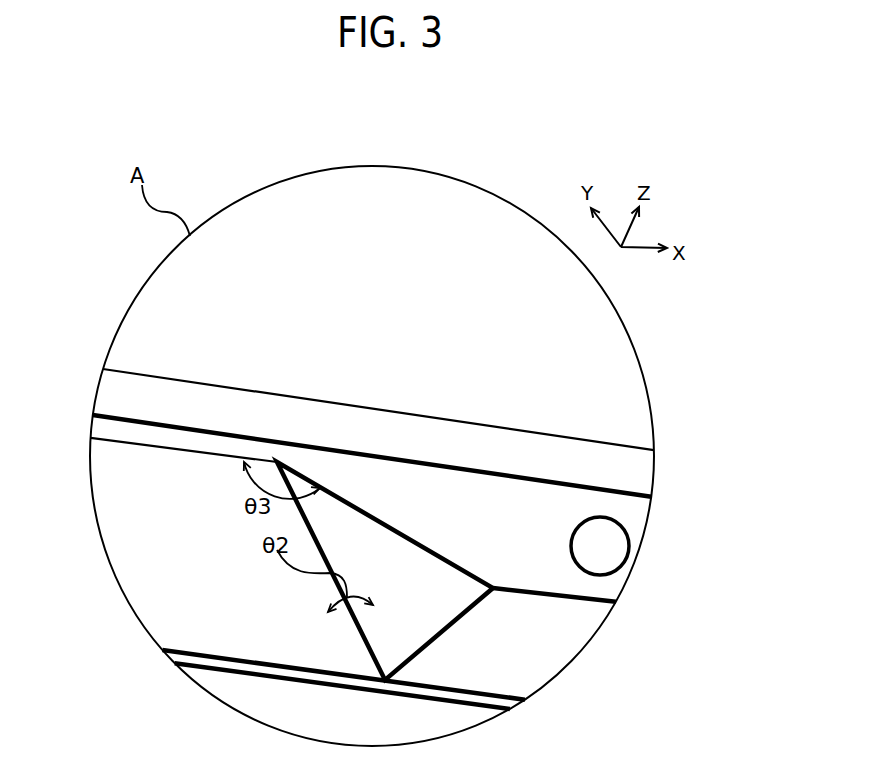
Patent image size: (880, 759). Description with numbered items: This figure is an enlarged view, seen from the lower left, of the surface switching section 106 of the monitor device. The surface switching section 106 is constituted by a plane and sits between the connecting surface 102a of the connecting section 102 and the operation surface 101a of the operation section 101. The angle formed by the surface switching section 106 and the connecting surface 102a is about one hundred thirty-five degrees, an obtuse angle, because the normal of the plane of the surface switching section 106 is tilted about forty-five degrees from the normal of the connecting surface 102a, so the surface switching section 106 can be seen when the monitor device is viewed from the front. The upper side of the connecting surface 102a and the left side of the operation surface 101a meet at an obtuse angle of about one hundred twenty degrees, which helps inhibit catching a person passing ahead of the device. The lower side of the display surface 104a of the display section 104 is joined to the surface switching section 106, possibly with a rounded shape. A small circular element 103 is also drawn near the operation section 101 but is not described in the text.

The display section 104 is at (439, 407).
The display surface 104a is at (538, 323).
The cylindrical member 103 is at (598, 543).
The operation section 101 is at (650, 616).
The operation surface 101a is at (507, 559).
The surface switching section 106 is at (420, 608).
The connecting section 102 is at (282, 633).
The connecting surface 102a is at (165, 557).